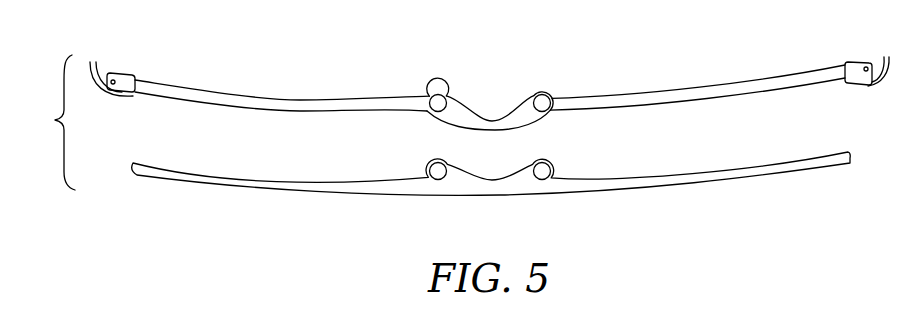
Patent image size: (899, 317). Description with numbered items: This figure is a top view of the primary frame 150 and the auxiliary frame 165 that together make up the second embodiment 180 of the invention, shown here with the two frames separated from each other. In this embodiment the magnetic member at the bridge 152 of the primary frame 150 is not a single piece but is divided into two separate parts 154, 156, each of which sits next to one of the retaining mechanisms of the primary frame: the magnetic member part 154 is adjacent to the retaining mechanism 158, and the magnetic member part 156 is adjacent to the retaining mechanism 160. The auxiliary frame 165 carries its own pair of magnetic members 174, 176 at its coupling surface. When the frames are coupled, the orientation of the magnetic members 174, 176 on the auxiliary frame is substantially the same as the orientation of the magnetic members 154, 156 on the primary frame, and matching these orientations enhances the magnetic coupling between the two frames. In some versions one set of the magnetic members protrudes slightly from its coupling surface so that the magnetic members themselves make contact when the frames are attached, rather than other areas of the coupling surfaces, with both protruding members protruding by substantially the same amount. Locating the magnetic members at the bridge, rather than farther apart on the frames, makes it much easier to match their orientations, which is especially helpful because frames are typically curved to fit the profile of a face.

The primary frame 150 is at (489, 68).
The bridge 152 is at (488, 80).
The magnetic member part 154 is at (417, 80).
The magnetic member part 156 is at (572, 80).
The retaining mechanism 158 is at (282, 80).
The retaining mechanism 160 is at (697, 77).
The auxiliary frame 165 is at (491, 197).
The magnetic member 174 is at (417, 203).
The magnetic member 176 is at (565, 203).
The second embodiment 180 is at (46, 122).